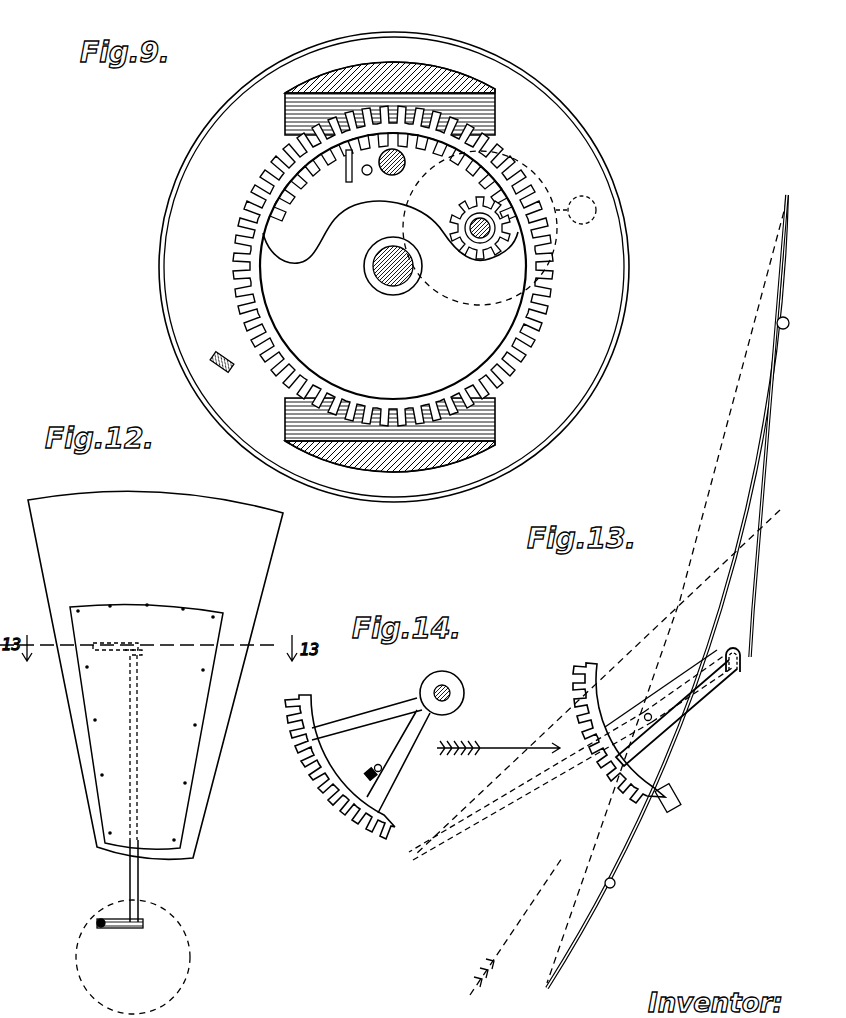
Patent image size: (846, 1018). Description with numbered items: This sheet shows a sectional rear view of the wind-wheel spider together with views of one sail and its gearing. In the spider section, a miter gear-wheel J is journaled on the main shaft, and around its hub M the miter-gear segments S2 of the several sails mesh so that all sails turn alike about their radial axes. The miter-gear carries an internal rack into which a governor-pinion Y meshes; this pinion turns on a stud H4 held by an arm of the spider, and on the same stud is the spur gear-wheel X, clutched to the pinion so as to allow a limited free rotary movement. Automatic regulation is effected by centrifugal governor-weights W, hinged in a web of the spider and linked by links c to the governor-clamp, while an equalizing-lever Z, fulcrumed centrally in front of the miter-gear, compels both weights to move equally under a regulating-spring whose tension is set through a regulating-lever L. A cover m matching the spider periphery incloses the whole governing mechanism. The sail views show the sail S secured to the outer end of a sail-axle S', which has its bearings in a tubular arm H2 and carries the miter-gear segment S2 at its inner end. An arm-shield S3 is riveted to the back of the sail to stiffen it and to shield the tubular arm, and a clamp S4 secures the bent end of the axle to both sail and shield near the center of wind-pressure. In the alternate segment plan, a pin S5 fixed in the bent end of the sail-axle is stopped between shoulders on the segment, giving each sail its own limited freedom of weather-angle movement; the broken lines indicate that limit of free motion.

In FIG. 9, the centrifugal governor-weight W is at (390, 267).
In FIG. 9, the miter gear-wheel J is at (393, 266).
In FIG. 9, the central shaft hub M is at (385, 280).
In FIG. 9, the governor-pinion Y is at (468, 208).
In FIG. 9, the stud H4 is at (477, 240).
In FIG. 9, the spur gear-wheel X is at (576, 210).
In FIG. 9, the equalizing-lever Z is at (345, 168).
In FIG. 9, the link c is at (380, 164).
In FIG. 9, the cover m is at (590, 135).
In FIG. 9, the regulating-lever L is at (218, 350).
In FIG. 12, the sail S is at (155, 675).
In FIG. 13, the sail S is at (667, 591).
In FIG. 12, the sail-axle S' is at (128, 727).
In FIG. 14, the sail-axle S' is at (402, 742).
In FIG. 13, the sail-axle S' is at (672, 707).
In FIG. 12, the miter-gear segment S2 is at (100, 927).
In FIG. 14, the miter-gear segment S2 is at (392, 822).
In FIG. 13, the miter-gear segment S2 is at (580, 700).
In FIG. 12, the arm-shield S3 is at (146, 726).
In FIG. 13, the arm-shield S3 is at (758, 620).
In FIG. 12, the clamp S4 is at (128, 652).
In FIG. 13, the clamp S4 is at (735, 652).
In FIG. 14, the pin S5 is at (375, 764).
In FIG. 13, the pin S5 is at (645, 713).
In FIG. 12, the tubular arm H2 is at (137, 880).